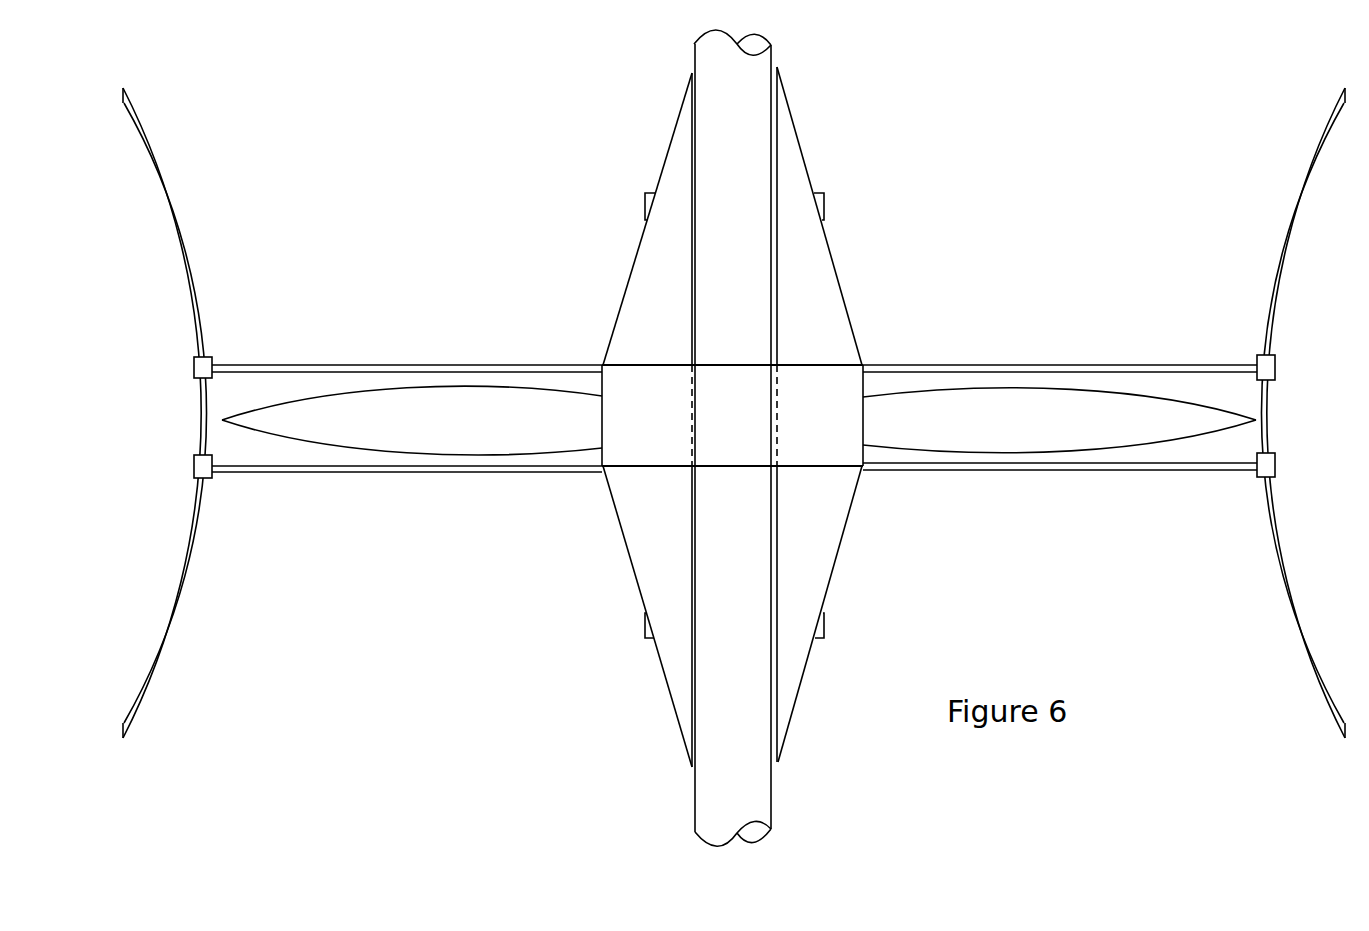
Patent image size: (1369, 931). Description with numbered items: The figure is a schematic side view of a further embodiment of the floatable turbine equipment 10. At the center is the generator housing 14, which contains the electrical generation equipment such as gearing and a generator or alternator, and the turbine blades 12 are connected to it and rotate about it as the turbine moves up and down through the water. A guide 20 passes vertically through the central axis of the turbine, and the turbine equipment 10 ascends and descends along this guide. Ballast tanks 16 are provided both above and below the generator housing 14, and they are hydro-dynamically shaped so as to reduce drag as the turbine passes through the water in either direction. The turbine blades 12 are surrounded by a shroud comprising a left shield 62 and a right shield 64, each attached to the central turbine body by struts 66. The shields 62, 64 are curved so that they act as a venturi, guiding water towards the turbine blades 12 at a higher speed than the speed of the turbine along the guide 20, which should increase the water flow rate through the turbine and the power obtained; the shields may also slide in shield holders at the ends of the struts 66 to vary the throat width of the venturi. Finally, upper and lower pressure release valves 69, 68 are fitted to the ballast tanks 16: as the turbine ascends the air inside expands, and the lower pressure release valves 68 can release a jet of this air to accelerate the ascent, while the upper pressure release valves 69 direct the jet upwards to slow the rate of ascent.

The floatable turbine 10 is at (498, 343).
The turbine blades 12 is at (433, 437).
The generator housing 14 is at (620, 452).
The ballast tanks 16 is at (819, 515).
The guide 20 is at (717, 83).
The left shield 62 is at (188, 613).
The right shield 64 is at (1278, 610).
The struts 66 is at (285, 470).
The lower pressure release valves 68 is at (645, 638).
The upper pressure release valves 69 is at (655, 195).